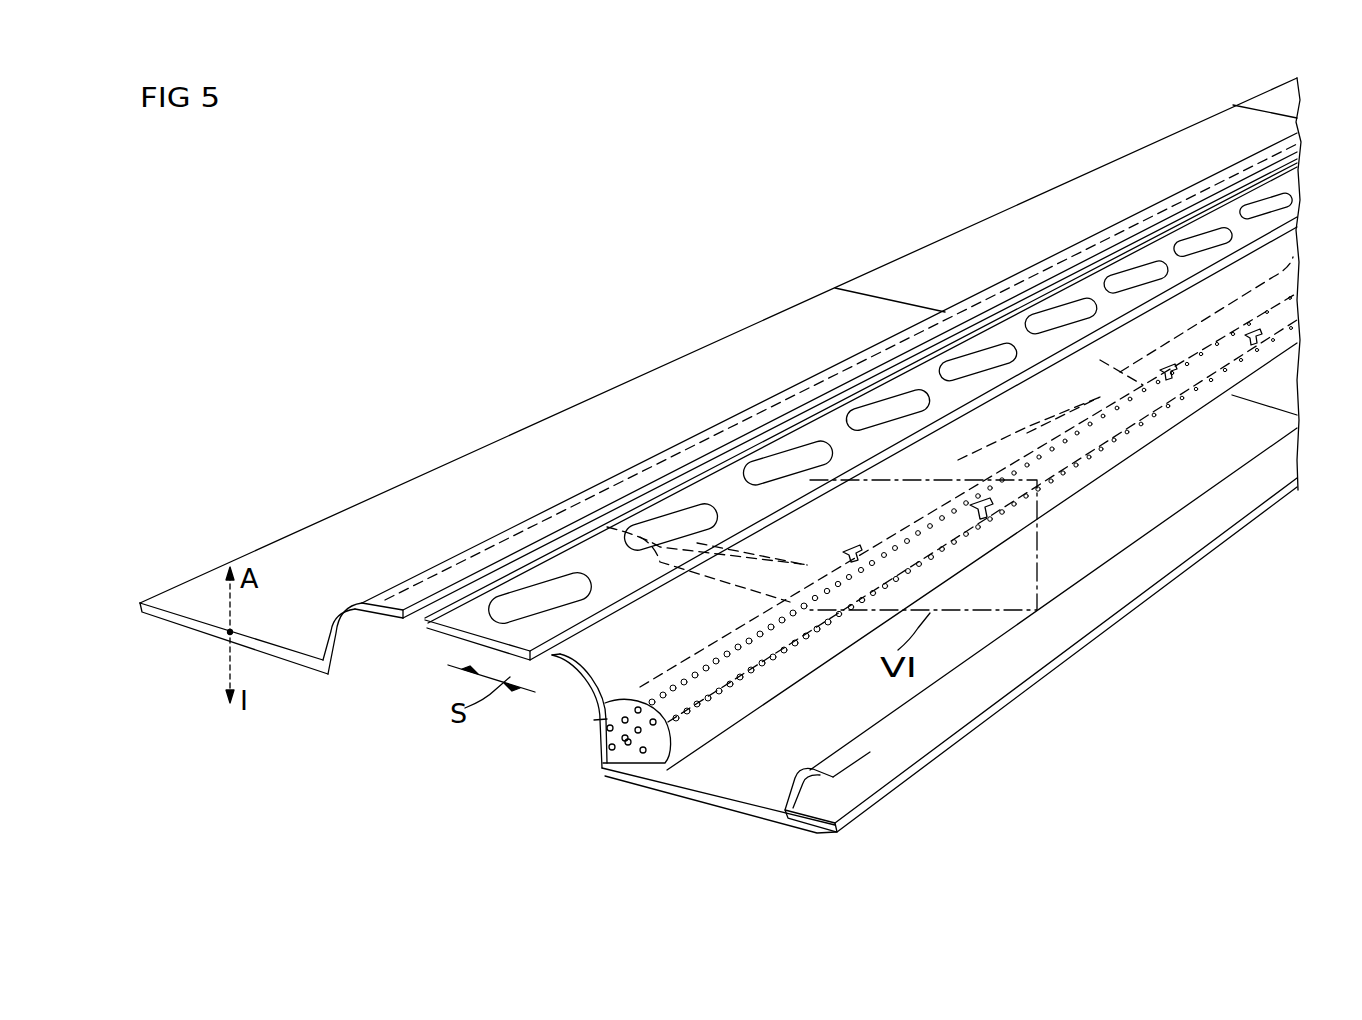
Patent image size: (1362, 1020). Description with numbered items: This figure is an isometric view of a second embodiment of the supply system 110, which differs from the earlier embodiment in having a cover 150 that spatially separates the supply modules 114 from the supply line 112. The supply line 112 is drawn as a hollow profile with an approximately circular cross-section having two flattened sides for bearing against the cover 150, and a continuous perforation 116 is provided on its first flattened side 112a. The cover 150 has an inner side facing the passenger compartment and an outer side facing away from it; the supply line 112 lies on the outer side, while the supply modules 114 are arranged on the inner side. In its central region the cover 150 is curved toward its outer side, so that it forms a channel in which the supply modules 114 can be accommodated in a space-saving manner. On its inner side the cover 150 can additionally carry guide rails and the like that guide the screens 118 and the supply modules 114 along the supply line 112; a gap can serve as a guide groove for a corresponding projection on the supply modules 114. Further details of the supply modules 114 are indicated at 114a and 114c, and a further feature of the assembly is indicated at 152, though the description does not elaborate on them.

The supply system 110 is at (300, 412).
The supply line 112 is at (647, 753).
The first flattened side 112a is at (603, 768).
The supply modules 114 is at (713, 490).
The retaining tab 114a is at (985, 515).
The retaining tab 114c is at (927, 540).
The continuous perforation 116 is at (1153, 412).
The screens 118 is at (352, 648).
The cover 150 is at (202, 595).
The plate edge 152 is at (627, 610).